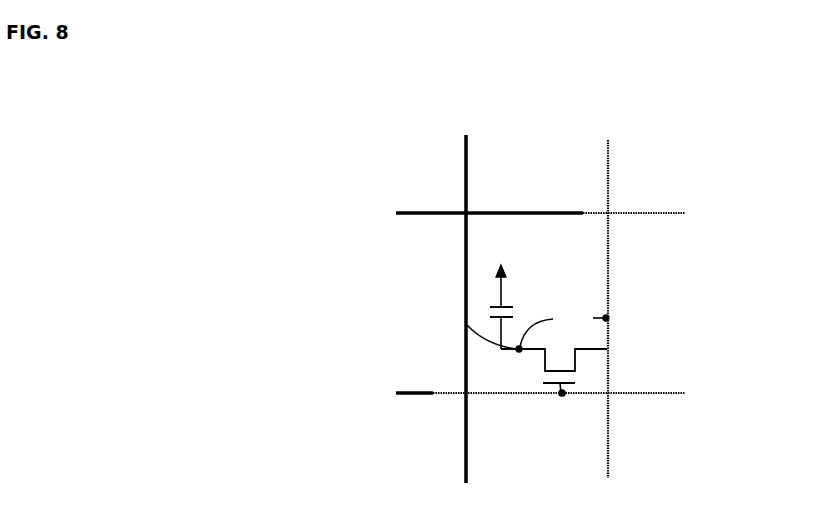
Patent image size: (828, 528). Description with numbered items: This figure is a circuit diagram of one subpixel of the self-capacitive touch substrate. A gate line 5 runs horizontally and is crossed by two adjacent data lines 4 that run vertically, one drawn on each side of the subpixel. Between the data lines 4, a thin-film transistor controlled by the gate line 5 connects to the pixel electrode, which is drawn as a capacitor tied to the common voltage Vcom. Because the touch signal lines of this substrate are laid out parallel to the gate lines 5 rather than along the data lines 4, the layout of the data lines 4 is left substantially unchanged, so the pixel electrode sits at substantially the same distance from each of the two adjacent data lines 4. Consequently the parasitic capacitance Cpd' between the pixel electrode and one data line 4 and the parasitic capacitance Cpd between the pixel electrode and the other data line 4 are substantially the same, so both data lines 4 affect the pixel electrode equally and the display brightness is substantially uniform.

The data line 4 is at (463, 153).
The gate line 5 is at (420, 210).
The common voltage Vcom is at (502, 276).
The parasitic capacitance Cpd is at (550, 329).
The parasitic capacitance Cpd' is at (491, 347).